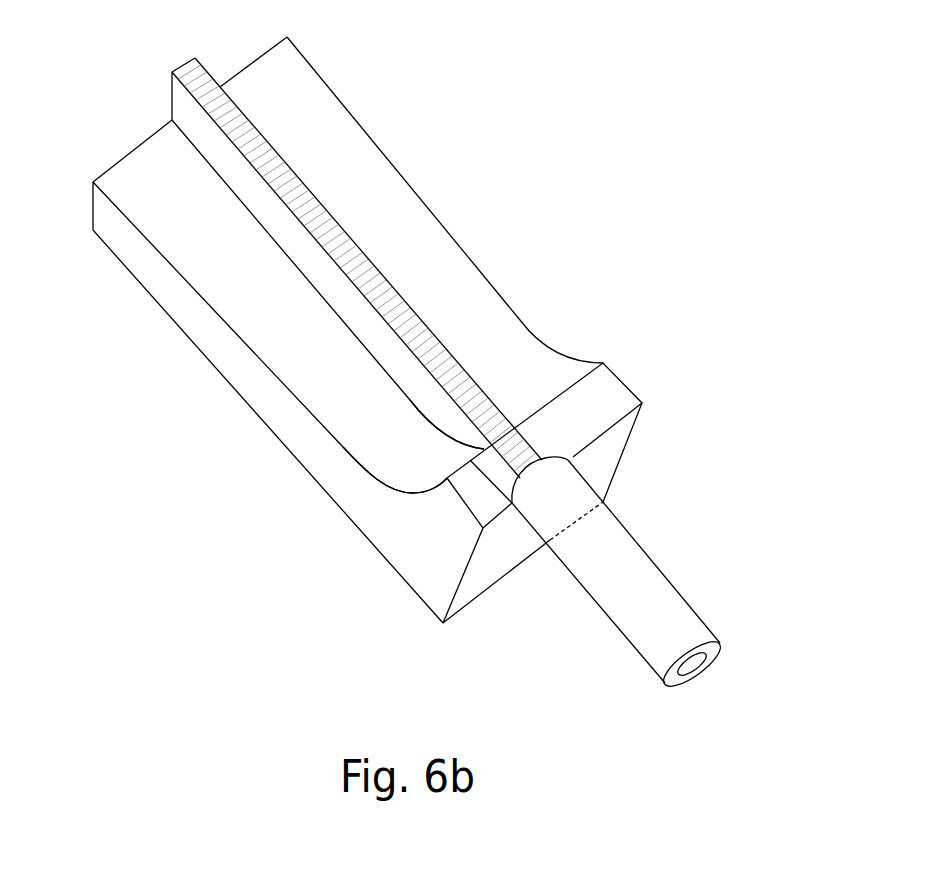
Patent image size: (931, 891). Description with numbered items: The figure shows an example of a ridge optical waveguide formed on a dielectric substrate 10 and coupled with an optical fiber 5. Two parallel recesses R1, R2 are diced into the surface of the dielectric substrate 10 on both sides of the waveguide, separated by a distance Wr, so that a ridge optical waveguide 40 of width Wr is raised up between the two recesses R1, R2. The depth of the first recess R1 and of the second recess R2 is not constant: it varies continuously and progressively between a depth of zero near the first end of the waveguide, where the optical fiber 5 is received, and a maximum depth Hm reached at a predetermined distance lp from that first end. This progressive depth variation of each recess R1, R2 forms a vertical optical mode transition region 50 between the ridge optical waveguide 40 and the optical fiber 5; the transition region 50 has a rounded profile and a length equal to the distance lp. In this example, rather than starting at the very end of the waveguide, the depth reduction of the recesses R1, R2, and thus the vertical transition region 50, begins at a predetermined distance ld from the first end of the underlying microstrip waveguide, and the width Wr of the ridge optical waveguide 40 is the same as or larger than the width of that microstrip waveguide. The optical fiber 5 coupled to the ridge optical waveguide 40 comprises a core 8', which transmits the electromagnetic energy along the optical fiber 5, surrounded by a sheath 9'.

The optical fiber 5 is at (656, 611).
The core 8' is at (706, 707).
The sheath 9' is at (728, 672).
The dielectric substrate 10 is at (210, 362).
The ridge optical waveguide 40 is at (207, 87).
The vertical optical mode transition region 50 is at (408, 490).
The first recess R1 is at (133, 170).
The second recess R2 is at (320, 103).
The width of the ridge optical waveguide Wr is at (182, 51).
The predetermined distance from the first end ld is at (490, 517).
The predetermined distance to maximum depth lp is at (365, 488).
The maximum depth Hm is at (488, 530).